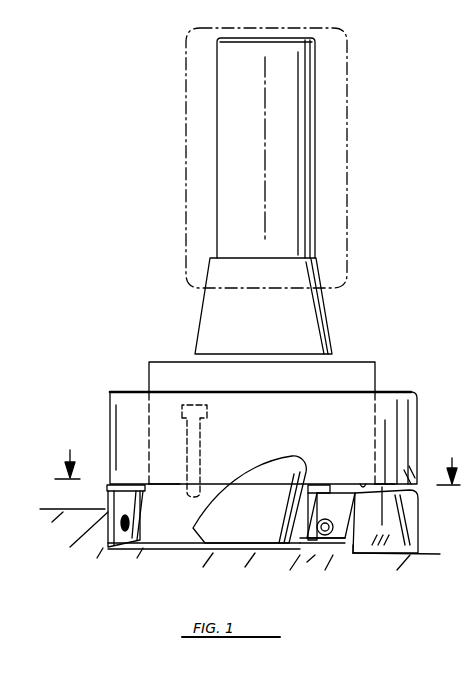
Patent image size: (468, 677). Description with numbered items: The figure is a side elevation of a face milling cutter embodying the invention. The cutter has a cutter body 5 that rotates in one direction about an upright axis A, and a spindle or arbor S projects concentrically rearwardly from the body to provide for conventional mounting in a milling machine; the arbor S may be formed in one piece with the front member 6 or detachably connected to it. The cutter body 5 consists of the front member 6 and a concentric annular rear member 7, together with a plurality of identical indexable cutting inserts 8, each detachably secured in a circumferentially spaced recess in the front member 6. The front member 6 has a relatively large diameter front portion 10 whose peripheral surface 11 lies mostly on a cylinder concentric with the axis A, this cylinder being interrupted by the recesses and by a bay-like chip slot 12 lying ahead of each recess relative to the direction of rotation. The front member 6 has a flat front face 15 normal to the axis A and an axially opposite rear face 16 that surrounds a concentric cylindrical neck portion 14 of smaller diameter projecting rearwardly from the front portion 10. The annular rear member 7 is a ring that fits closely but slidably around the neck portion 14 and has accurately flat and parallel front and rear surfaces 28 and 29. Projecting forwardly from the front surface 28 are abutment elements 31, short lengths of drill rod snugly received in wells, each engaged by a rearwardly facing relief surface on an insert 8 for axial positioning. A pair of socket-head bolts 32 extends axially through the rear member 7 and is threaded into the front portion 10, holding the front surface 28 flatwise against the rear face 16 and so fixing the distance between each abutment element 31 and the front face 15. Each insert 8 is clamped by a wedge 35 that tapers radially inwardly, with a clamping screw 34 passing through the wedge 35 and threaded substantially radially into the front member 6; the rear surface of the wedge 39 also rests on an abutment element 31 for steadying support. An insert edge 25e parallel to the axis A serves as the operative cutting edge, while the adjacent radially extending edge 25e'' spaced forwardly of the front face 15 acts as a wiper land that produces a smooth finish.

The axis A is at (265, 104).
The spindle or arbor S is at (313, 163).
The cutter body 5 is at (350, 340).
The neck portion 14 is at (378, 368).
The annular rear member 7 is at (110, 406).
The rear surface 29 is at (126, 390).
The socket-head bolts 32 is at (208, 428).
The rear face 16 is at (178, 482).
The chip slot 12 is at (258, 498).
The abutment elements 31 is at (110, 490).
The front surface 28 is at (371, 484).
The wedge 39 is at (349, 486).
The front member 6 is at (125, 586).
The peripheral surface 11 is at (161, 506).
The indexable cutting inserts 8 is at (107, 543).
The wedge 35 is at (108, 548).
The front face 15 is at (200, 553).
The clamping screw 34 is at (325, 535).
The front portion 10 is at (355, 523).
The edges 25e is at (403, 520).
The wiper land edge 25e'' is at (383, 567).